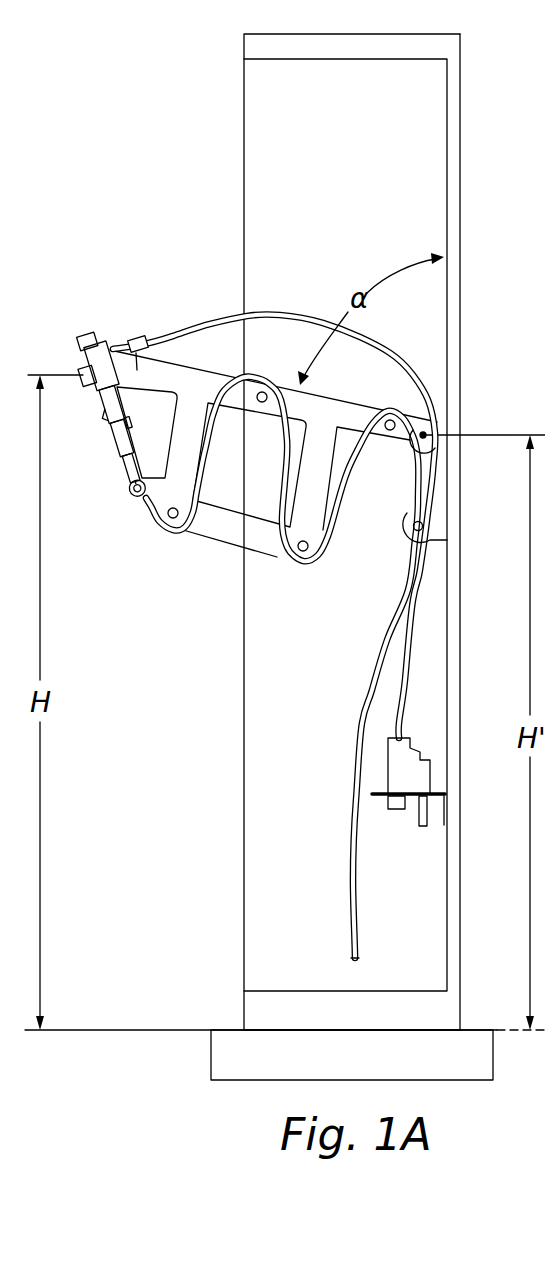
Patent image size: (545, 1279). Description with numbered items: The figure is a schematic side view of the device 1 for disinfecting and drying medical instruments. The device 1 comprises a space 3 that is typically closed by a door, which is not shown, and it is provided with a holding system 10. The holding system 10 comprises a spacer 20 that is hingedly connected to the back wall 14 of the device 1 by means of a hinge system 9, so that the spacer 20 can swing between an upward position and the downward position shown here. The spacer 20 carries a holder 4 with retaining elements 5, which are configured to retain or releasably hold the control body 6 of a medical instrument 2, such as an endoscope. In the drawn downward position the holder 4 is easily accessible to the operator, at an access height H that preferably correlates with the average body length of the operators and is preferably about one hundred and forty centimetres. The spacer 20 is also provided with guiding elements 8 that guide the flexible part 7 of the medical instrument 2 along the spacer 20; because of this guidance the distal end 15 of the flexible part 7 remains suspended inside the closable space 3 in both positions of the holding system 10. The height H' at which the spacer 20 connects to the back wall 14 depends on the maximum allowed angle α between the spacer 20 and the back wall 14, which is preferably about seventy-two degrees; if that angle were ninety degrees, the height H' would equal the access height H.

The device 1 is at (163, 81).
The medical instrument 2 is at (175, 312).
The space 3 is at (360, 154).
The holder 4 is at (131, 342).
The retaining elements 5 is at (82, 387).
The control body 6 is at (87, 357).
The flexible part 7 is at (375, 657).
The guiding elements 8 is at (263, 392).
The hinge system 9 is at (422, 485).
The holding system 10 is at (138, 534).
The back wall 14 is at (453, 162).
The distal end 15 is at (355, 960).
The spacer 20 is at (207, 378).